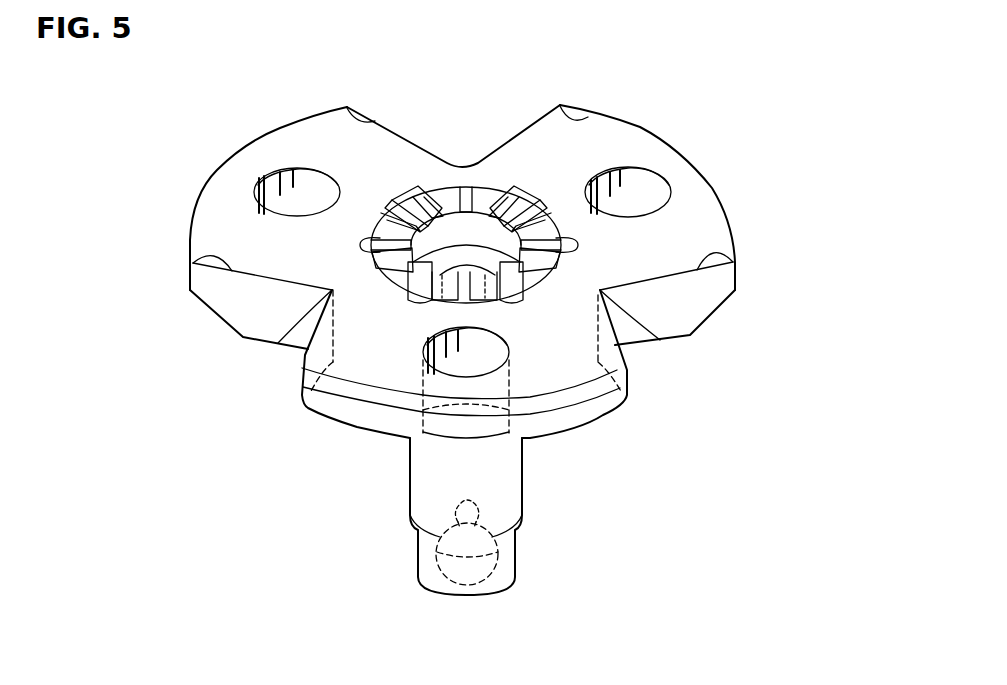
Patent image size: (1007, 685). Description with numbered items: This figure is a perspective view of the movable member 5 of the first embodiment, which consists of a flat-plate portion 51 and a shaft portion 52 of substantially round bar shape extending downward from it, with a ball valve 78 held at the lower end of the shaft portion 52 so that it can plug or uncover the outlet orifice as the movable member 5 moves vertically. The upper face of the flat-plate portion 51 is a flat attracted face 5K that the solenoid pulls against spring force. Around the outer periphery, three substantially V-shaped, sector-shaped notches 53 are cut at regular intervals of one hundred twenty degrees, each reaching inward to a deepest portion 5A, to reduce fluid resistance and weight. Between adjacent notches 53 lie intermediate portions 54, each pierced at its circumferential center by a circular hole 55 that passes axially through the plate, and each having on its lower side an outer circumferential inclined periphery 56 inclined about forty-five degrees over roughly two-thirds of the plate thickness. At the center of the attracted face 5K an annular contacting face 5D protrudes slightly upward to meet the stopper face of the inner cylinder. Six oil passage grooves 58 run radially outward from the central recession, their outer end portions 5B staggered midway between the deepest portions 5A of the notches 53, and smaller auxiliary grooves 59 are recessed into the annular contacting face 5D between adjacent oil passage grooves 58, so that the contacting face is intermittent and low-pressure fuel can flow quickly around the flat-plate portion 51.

The movable member 5 is at (611, 107).
The flat-plate portion 51 is at (672, 158).
The shaft portion 52 is at (425, 488).
The notch 53 is at (350, 108).
The intermediate portion 54 is at (248, 168).
The circular hole 55 is at (303, 183).
The outer circumferential inclined periphery 56 is at (217, 316).
The oil passage groove 58 is at (417, 192).
The auxiliary groove 59 is at (455, 187).
The deepest portion 5A is at (278, 343).
The outer end portion 5B is at (402, 193).
The annular contacting face 5D is at (500, 187).
The attracted face 5K is at (571, 122).
The ball valve 78 is at (490, 558).